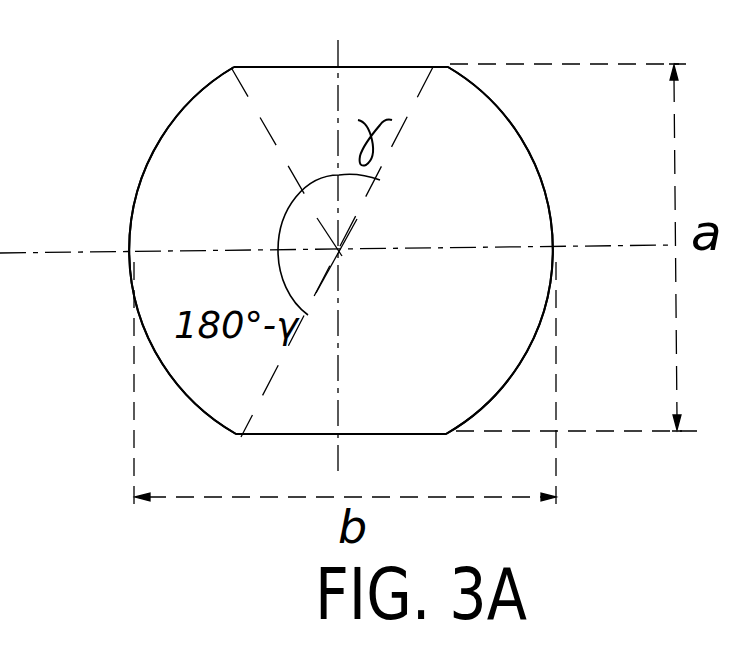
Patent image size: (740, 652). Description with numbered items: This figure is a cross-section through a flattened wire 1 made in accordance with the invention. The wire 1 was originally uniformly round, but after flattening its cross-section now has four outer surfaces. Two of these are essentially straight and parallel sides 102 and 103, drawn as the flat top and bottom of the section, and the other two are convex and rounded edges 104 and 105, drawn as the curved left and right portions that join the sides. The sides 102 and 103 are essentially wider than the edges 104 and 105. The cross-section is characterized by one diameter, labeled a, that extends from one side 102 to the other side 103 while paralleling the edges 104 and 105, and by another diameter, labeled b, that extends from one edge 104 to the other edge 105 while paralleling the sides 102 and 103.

The flattened wire 1 is at (168, 163).
The side 102 is at (392, 66).
The side 103 is at (293, 441).
The edge 104 is at (136, 210).
The edge 105 is at (547, 192).